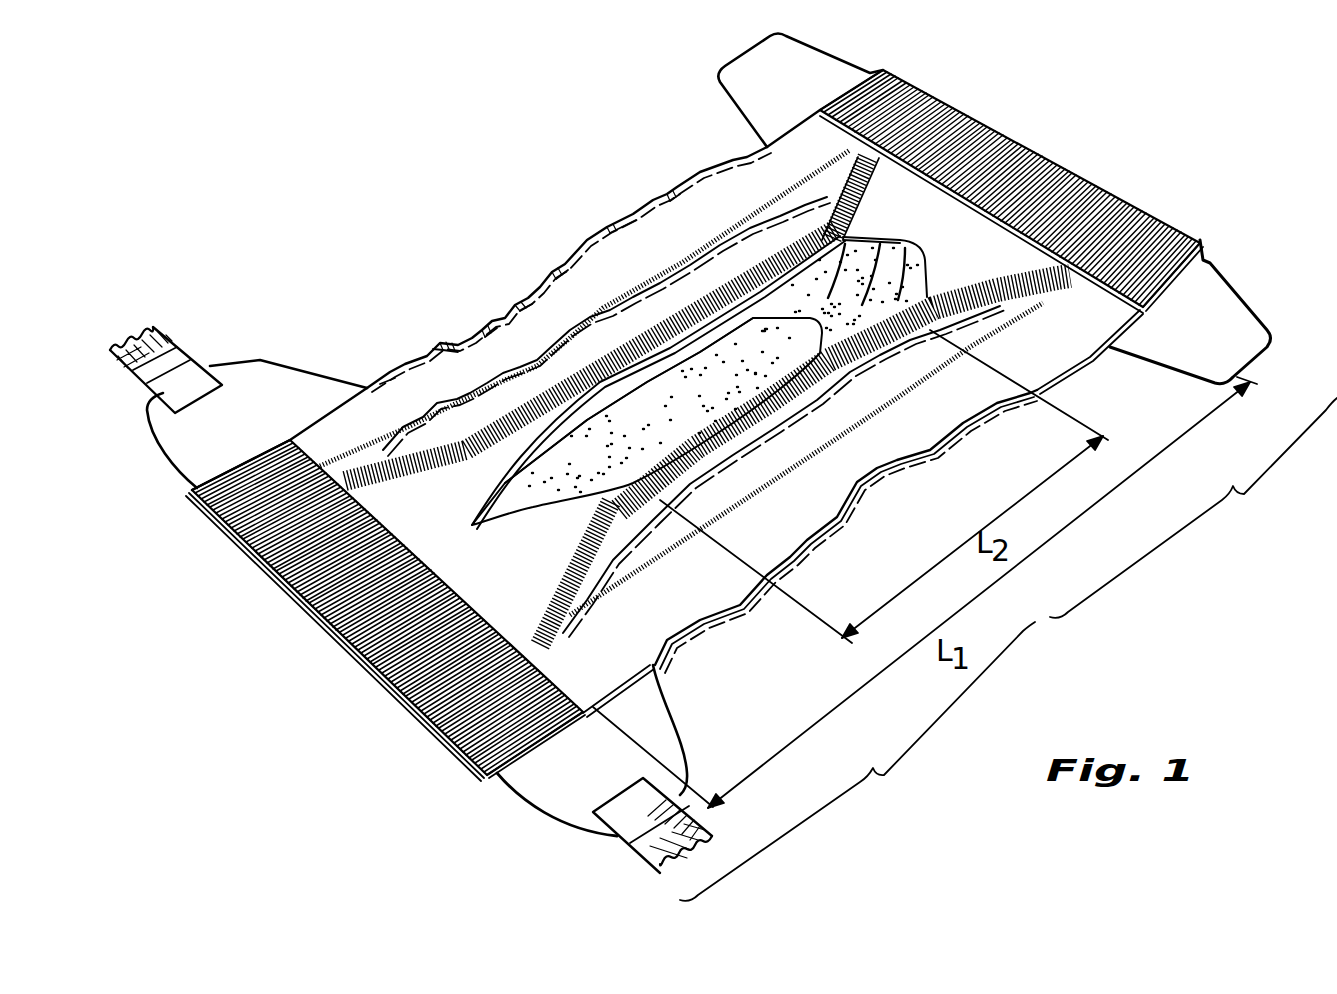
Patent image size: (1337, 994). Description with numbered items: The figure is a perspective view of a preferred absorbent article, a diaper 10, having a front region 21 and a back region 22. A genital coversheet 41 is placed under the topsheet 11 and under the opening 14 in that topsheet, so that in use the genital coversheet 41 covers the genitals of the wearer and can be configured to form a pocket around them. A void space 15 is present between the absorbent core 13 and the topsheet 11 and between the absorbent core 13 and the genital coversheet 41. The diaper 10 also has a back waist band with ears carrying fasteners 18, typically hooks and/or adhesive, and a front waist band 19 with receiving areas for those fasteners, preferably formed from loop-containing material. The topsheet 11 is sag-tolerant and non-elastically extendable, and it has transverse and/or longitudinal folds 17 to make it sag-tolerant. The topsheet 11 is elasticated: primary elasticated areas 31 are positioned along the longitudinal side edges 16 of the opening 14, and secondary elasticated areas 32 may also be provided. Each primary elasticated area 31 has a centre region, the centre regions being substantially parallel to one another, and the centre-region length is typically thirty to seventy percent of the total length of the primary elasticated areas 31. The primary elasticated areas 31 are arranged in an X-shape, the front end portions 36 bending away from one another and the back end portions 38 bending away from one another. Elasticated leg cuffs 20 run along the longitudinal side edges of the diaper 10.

The diaper 10 is at (494, 184).
The topsheet 11 is at (457, 550).
The absorbent core 13 is at (523, 492).
The opening 14 is at (570, 500).
The void space 15 is at (620, 432).
The longitudinal side edges 16 is at (722, 426).
The longitudinal folds 17 is at (667, 272).
The fasteners 18 is at (163, 327).
The front waist band 19 is at (755, 75).
The leg cuffs 20 is at (673, 184).
The front region 21 is at (965, 592).
The back region 22 is at (884, 615).
The primary elasticated areas 31 is at (620, 360).
The secondary elasticated areas 32 is at (787, 187).
The front end portions 36 is at (985, 288).
The back end portions 38 is at (533, 617).
The genital coversheet 41 is at (872, 238).